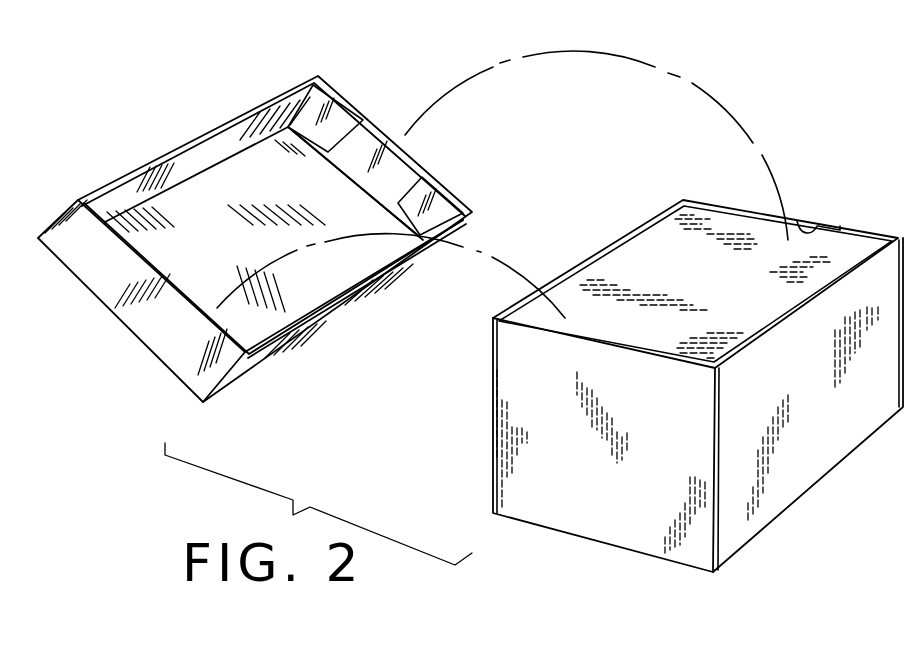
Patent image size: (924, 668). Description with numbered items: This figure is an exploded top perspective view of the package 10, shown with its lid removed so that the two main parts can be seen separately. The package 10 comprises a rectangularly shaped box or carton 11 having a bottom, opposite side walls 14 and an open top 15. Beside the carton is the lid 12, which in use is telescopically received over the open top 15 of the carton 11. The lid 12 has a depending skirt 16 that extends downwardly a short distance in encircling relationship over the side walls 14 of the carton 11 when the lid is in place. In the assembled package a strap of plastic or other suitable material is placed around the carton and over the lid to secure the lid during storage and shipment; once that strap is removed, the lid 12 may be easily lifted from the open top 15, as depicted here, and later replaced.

The package 10 is at (338, 408).
The box or carton 11 is at (626, 549).
The lid 12 is at (141, 344).
The side walls 14 is at (693, 203).
The open top 15 is at (800, 226).
The depending skirt 16 is at (365, 114).